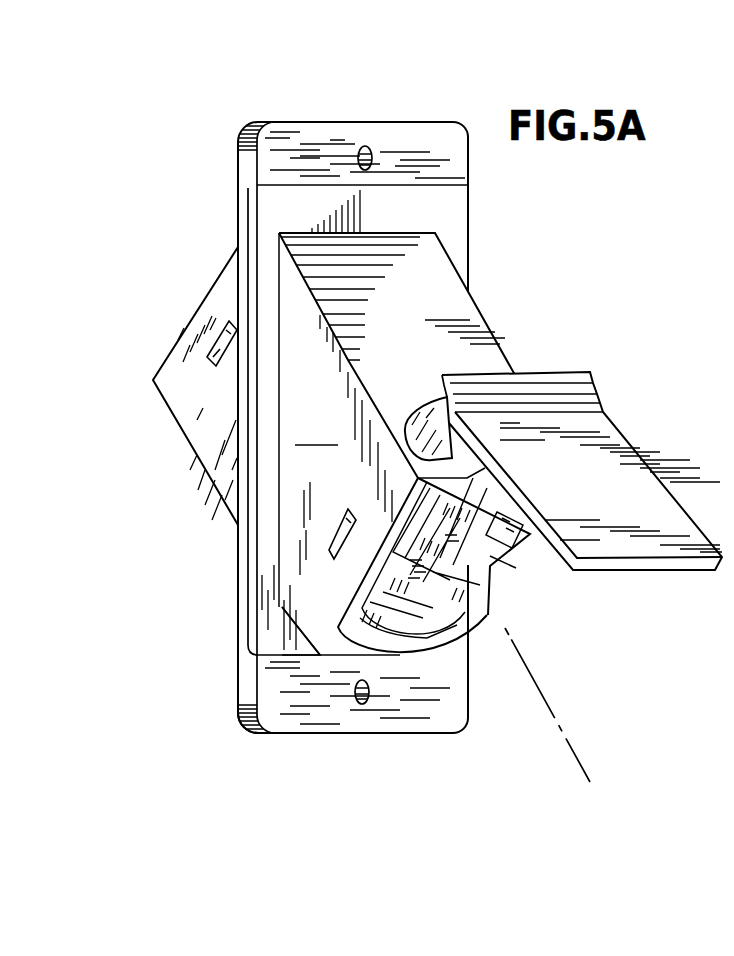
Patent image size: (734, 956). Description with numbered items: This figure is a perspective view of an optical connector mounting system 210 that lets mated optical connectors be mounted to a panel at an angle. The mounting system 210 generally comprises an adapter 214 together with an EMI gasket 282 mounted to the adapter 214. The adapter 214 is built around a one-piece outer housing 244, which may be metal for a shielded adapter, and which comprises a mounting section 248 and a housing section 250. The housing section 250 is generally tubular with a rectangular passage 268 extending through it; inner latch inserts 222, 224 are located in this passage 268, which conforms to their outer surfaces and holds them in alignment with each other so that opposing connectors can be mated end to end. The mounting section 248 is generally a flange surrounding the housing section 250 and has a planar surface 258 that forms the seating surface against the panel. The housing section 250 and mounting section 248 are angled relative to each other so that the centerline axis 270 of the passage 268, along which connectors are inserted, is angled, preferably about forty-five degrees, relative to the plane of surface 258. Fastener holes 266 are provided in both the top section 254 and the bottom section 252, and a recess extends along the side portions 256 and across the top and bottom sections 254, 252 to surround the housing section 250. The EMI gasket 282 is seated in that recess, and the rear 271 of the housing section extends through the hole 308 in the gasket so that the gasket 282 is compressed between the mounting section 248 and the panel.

The optical connector mounting system 210 is at (547, 281).
The adapter 214 is at (468, 357).
The latch insert 222 is at (497, 580).
The latch insert 224 is at (206, 303).
The outer housing 244 is at (244, 176).
The mounting section 248 is at (280, 713).
The housing section 250 is at (194, 445).
The bottom section 252 is at (267, 697).
The top section 254 is at (323, 128).
The side portion 256 is at (246, 556).
The planar surface 258 is at (453, 717).
The fastener hole 266 is at (368, 150).
The passage 268 is at (512, 537).
The centerline axis 270 is at (548, 684).
The rear of the housing section 271 is at (396, 422).
The EMI gasket 282 is at (457, 205).
The hole in the gasket 308 is at (282, 607).